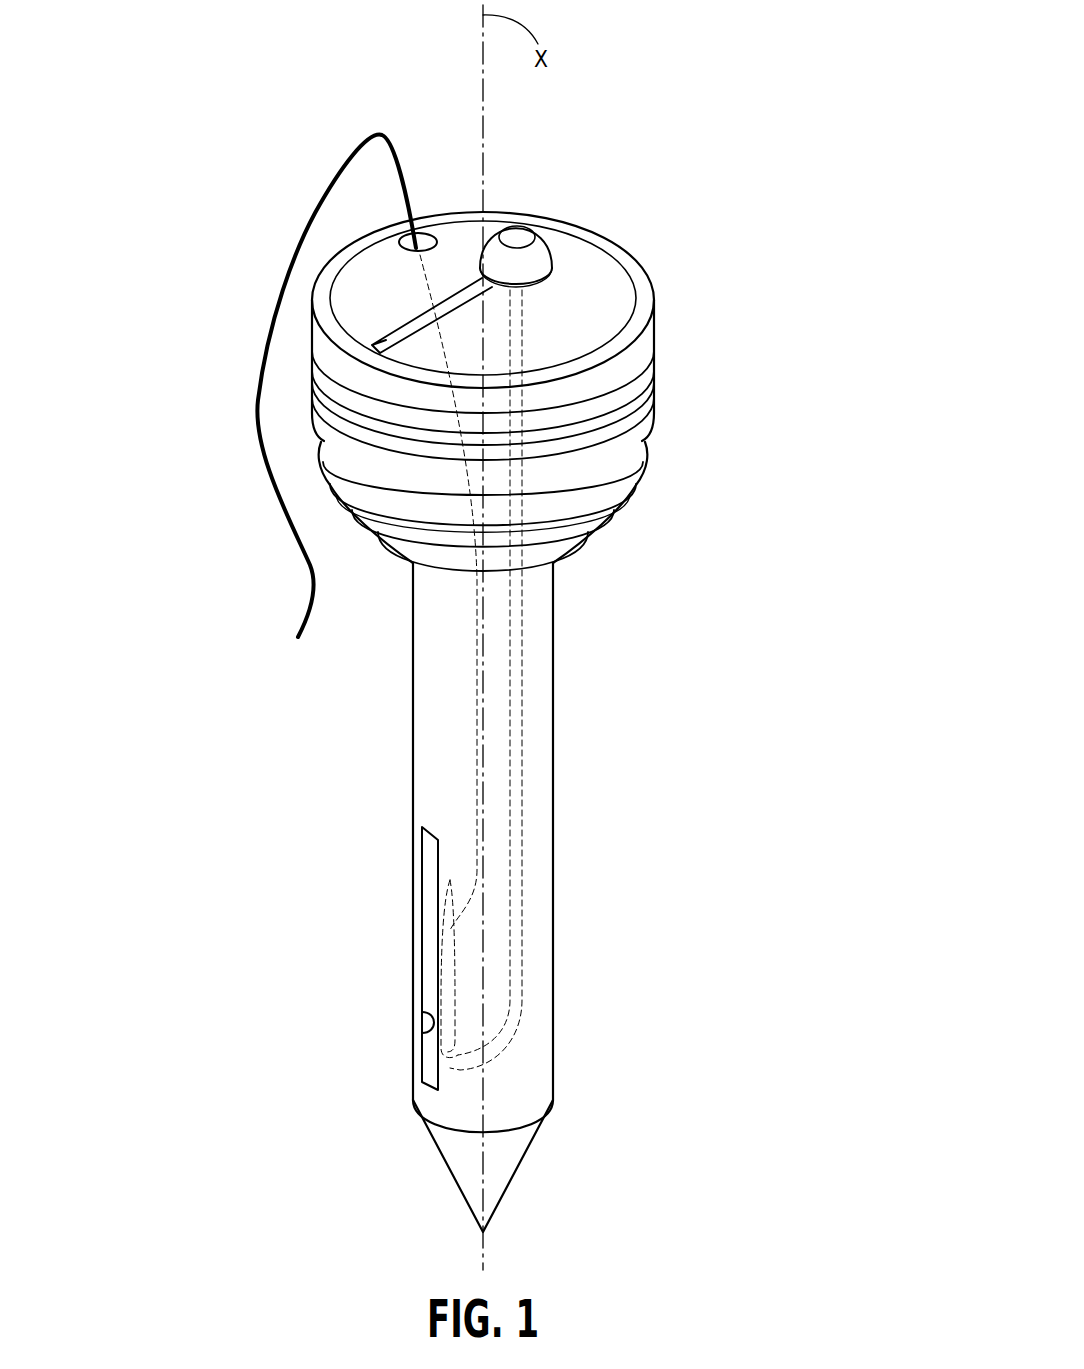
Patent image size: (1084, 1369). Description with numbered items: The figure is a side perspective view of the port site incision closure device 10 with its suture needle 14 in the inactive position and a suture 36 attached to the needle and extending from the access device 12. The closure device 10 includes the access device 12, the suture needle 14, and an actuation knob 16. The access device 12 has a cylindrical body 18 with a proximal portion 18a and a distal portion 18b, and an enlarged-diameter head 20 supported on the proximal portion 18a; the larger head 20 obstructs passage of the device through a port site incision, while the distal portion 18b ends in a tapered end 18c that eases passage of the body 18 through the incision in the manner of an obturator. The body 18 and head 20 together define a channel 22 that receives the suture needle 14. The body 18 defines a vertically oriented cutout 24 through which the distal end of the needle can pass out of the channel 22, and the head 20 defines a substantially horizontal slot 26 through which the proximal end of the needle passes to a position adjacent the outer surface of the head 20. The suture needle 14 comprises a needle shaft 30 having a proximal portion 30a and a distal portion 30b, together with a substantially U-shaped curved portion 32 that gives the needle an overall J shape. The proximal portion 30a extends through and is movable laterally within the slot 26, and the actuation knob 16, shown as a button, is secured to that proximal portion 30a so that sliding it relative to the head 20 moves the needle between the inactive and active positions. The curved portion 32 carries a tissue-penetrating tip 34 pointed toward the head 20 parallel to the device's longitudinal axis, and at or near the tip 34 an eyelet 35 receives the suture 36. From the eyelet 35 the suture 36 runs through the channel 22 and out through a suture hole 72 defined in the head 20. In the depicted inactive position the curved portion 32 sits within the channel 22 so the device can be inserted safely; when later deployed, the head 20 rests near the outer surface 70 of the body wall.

The closure device 10 is at (620, 189).
The access device 12 is at (662, 394).
The suture needle 14 is at (525, 720).
The actuation knob 16 is at (562, 246).
The body 18 is at (558, 620).
The proximal portion 18a is at (535, 585).
The distal portion 18b is at (540, 1102).
The tapered end 18c is at (515, 1167).
The head 20 is at (662, 323).
The channel 22 is at (430, 856).
The cutout 24 is at (427, 1030).
The slot 26 is at (381, 352).
The needle shaft 30 is at (515, 695).
The proximal portion 30a is at (513, 310).
The distal portion 30b is at (518, 838).
The curved portion 32 is at (470, 1062).
The tip 34 is at (455, 930).
The eyelet 35 is at (455, 930).
The suture 36 is at (330, 184).
The outer surface 70 is at (498, 215).
The suture hole 72 is at (432, 226).